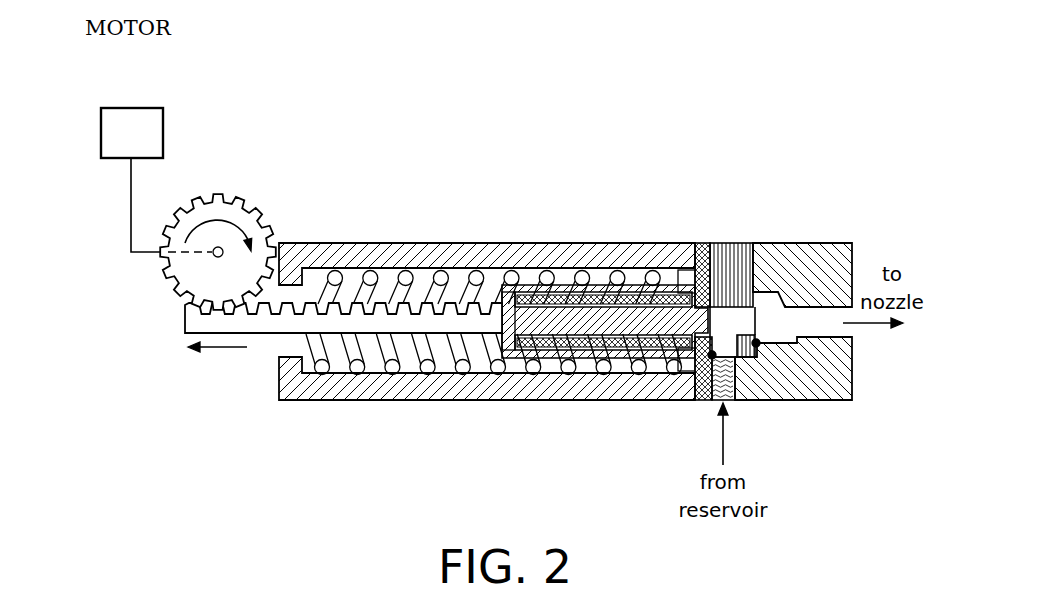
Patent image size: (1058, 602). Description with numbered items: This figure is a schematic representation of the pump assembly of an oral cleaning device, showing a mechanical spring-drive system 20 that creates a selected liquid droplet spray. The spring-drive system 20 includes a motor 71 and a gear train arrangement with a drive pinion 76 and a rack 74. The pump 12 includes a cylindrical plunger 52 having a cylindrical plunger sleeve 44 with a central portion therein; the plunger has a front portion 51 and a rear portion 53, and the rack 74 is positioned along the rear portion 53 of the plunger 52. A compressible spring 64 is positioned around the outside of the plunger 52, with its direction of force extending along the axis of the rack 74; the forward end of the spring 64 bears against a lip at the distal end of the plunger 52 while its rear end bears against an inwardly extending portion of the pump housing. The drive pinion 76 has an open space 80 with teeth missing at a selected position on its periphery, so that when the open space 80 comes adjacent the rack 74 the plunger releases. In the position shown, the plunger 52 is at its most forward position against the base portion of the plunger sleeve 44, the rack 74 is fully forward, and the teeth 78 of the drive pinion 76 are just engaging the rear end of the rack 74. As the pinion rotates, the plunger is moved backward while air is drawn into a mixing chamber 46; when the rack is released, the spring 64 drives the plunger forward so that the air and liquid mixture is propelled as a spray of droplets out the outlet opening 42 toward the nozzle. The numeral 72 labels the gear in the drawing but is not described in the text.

The pump 12 is at (575, 231).
The mechanical spring-drive system 20 is at (833, 167).
The outlet opening 42 is at (842, 330).
The cylindrical plunger sleeve 44 is at (633, 300).
The mixing chamber 46 is at (735, 325).
The front portion 51 is at (587, 325).
The cylindrical plunger 52 is at (525, 290).
The rear portion 53 is at (258, 334).
The compressible spring 64 is at (378, 297).
The motor 71 is at (134, 118).
The gear 72 is at (162, 290).
The rack 74 is at (186, 328).
The drive pinion 76 is at (218, 191).
The teeth 78 is at (253, 196).
The open space 80 is at (183, 293).